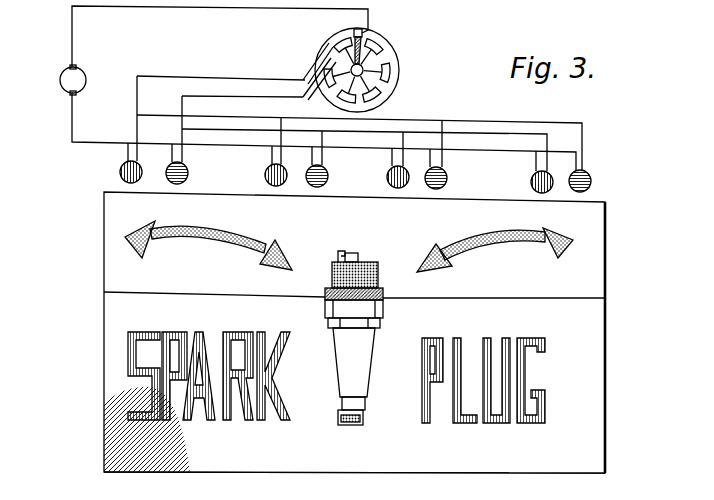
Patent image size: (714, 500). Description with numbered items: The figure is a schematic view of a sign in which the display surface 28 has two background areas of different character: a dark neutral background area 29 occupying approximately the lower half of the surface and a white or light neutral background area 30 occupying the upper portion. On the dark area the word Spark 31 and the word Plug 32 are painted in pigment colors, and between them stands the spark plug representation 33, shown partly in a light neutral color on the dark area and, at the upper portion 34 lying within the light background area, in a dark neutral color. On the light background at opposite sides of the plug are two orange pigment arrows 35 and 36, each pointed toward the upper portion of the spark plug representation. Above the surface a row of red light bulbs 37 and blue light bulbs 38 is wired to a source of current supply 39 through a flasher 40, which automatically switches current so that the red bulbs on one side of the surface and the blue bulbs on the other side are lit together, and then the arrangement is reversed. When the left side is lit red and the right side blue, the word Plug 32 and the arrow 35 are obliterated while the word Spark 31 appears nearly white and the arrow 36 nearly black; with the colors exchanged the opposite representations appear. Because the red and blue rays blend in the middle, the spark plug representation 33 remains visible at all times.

The display surface 28 is at (590, 334).
The dark neutral background area 29 is at (590, 393).
The light neutral background area 30 is at (593, 218).
The word Spark representation 31 is at (262, 415).
The word Plug representation 32 is at (498, 423).
The spark plug representation 33 is at (363, 353).
The dark neutral colored portion of spark plug representation 34 is at (375, 263).
The arrow 35 is at (204, 232).
The arrow 36 is at (497, 243).
The red light bulbs 37 is at (120, 174).
The blue light bulbs 38 is at (188, 174).
The source of current supply 39 is at (82, 73).
The flasher 40 is at (392, 58).